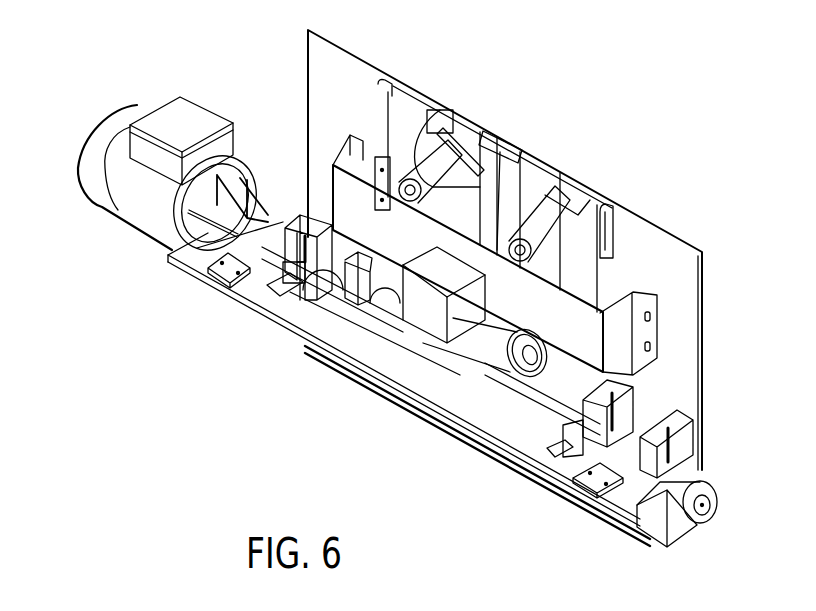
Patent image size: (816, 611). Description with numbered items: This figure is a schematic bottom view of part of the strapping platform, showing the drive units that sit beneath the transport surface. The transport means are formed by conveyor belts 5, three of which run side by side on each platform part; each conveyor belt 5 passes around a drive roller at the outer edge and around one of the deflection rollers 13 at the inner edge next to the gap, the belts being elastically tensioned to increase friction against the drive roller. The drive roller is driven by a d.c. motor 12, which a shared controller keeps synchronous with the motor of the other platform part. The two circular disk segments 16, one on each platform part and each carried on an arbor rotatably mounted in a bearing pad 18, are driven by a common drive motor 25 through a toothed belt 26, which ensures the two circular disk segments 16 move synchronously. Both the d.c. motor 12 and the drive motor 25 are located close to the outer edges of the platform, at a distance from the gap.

The conveyor belt 5 is at (407, 120).
The d.c. motor 12 is at (128, 115).
The deflection roller 13 is at (388, 84).
The circular disk segment 16 is at (460, 170).
The bearing pad 18 is at (424, 112).
The drive motor 25 is at (483, 338).
The toothed belt 26 is at (494, 245).